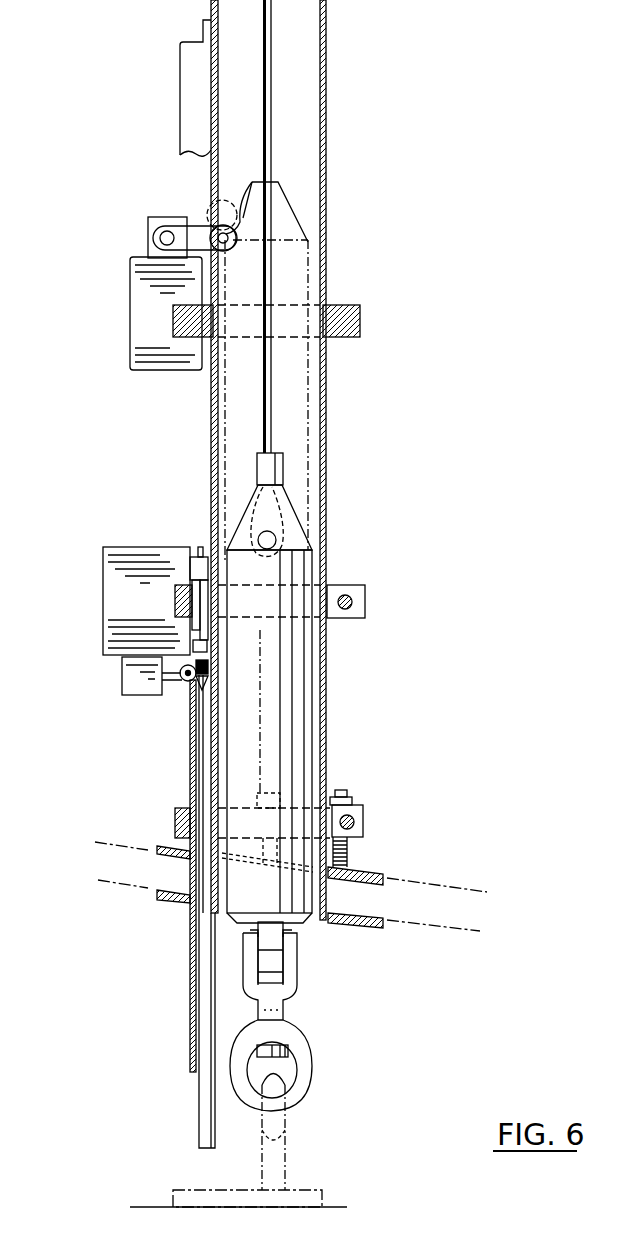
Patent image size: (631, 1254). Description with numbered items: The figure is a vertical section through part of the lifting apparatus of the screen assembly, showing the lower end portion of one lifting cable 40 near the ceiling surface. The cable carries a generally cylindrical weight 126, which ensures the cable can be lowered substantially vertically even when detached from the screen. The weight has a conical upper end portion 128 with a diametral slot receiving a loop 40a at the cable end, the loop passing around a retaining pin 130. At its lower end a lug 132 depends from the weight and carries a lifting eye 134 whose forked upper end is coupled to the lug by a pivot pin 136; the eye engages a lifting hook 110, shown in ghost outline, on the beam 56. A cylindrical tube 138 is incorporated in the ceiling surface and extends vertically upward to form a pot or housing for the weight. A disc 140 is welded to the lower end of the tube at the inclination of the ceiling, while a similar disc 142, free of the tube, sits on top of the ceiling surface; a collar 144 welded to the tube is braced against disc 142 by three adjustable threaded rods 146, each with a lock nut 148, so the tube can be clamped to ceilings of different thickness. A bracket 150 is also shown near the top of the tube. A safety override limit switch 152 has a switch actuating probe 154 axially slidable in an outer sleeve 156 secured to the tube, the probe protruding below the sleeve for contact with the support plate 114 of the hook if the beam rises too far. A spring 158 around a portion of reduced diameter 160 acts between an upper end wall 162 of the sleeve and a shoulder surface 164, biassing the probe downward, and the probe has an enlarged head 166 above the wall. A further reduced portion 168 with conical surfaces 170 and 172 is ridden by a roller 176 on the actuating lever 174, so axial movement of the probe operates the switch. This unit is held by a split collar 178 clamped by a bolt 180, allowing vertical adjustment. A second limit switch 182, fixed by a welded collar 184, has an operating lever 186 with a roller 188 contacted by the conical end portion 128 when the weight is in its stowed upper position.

The lifting cable 40 is at (272, 76).
The loop 40a is at (288, 518).
The beam 56 is at (161, 1203).
The lifting hook 110 is at (275, 1130).
The support plate 114 is at (305, 1195).
The weight 126 is at (310, 285).
The conical upper end portion 128 is at (306, 530).
The retaining pin 130 is at (276, 540).
The lug 132 is at (275, 950).
The lifting eye 134 is at (305, 1065).
The pivot pin 136 is at (296, 962).
The cylindrical tube 138 is at (326, 420).
The disc 140 is at (383, 919).
The disc 142 is at (365, 870).
The collar 144 is at (363, 818).
The adjustable threaded rod 146 is at (268, 795).
The lock nut 148 is at (350, 797).
The bracket 150 is at (183, 42).
The limit switch 152 is at (101, 617).
The switch actuating probe 154 is at (200, 1095).
The outer sleeve 156 is at (190, 1022).
The spring 158 is at (192, 628).
The portion of reduced diameter 160 is at (190, 603).
The upper end wall 162 is at (191, 560).
The shoulder surface 164 is at (209, 637).
The enlarged head 166 is at (200, 555).
The further portion of reduced diameter 168 is at (209, 668).
The conical surface 170 is at (196, 692).
The conical surface 172 is at (208, 652).
The actuating lever 174 is at (172, 678).
The roller 176 is at (209, 685).
The collar 178 is at (366, 607).
The bolt 180 is at (348, 596).
The second limit switch 182 is at (124, 327).
The collar 184 is at (360, 318).
The operating lever 186 is at (197, 232).
The roller 188 is at (243, 222).